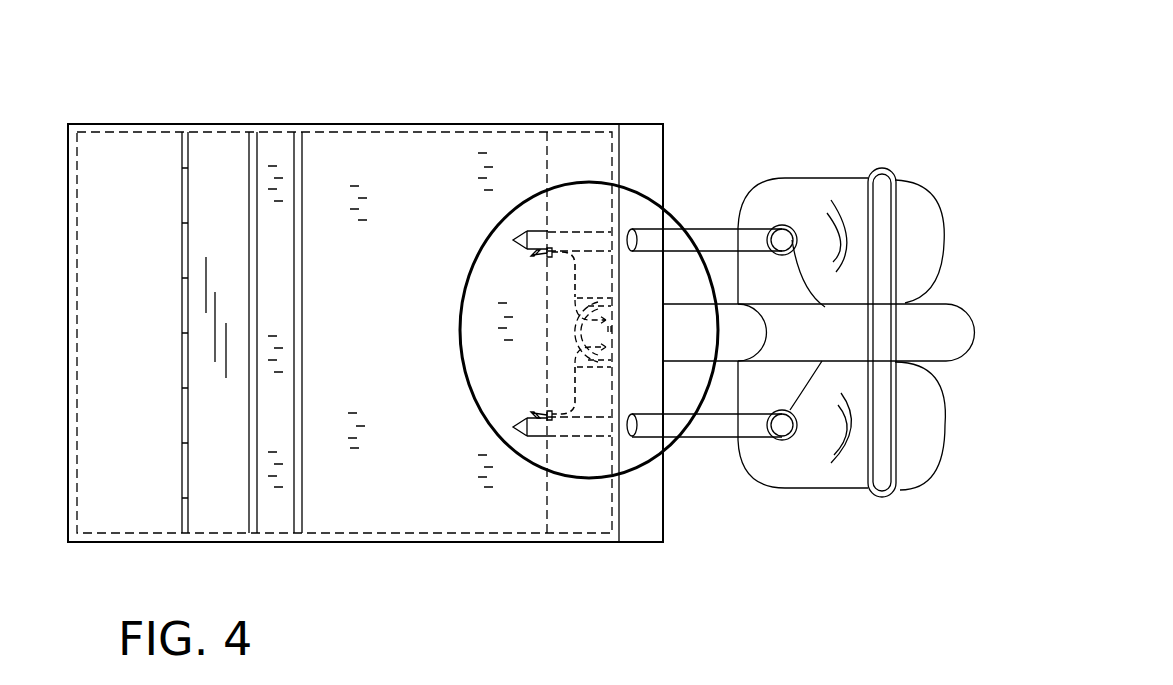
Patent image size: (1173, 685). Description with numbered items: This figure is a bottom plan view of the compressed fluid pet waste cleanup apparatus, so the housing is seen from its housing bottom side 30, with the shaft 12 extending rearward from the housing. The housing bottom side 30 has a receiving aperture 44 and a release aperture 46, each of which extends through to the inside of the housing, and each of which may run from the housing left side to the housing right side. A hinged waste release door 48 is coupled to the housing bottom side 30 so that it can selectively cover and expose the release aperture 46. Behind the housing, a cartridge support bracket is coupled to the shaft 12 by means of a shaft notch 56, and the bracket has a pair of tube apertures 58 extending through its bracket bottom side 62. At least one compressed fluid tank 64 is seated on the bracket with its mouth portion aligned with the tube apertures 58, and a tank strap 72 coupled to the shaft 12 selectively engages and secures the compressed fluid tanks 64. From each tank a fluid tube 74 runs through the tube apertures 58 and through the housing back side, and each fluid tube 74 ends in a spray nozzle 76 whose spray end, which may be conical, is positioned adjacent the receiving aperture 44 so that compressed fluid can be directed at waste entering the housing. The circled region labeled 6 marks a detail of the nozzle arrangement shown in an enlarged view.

The detail region circle 6 is at (562, 478).
The shaft 12 is at (948, 335).
The housing bottom side 30 is at (284, 513).
The receiving aperture 44 is at (360, 542).
The release aperture 46 is at (236, 128).
The hinged waste release door 48 is at (222, 503).
The shaft notch 56 is at (755, 340).
The tube apertures 58 is at (803, 408).
The bracket bottom side 62 is at (803, 408).
The compressed fluid tank 64 is at (843, 198).
The tank strap 72 is at (897, 318).
The fluid tube 74 is at (705, 240).
The spray nozzle 76 is at (527, 418).